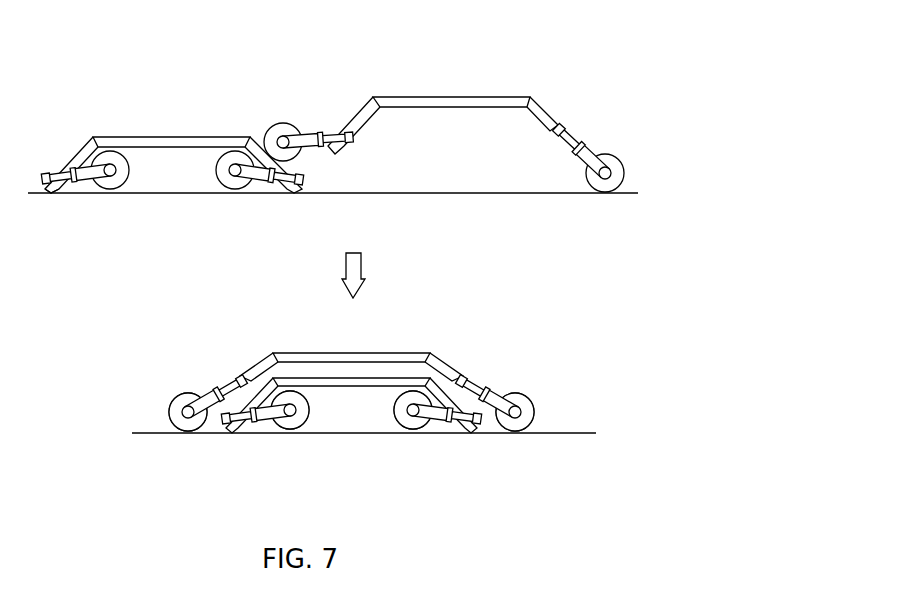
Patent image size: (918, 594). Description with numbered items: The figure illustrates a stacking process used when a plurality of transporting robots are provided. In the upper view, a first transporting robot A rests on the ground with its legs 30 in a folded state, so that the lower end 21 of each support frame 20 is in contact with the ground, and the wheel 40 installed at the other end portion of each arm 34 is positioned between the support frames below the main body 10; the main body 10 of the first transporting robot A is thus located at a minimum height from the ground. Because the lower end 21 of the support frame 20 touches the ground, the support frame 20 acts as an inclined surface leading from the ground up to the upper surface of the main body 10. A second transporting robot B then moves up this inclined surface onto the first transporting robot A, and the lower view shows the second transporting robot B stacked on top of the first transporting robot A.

The main body 10 is at (208, 142).
The support frame 20 is at (82, 147).
The lower end 21 is at (44, 189).
The leg 30 is at (88, 187).
The arm 34 is at (257, 178).
The wheel 40 is at (283, 122).
The first transporting robot A is at (164, 134).
The second transporting robot B is at (450, 95).